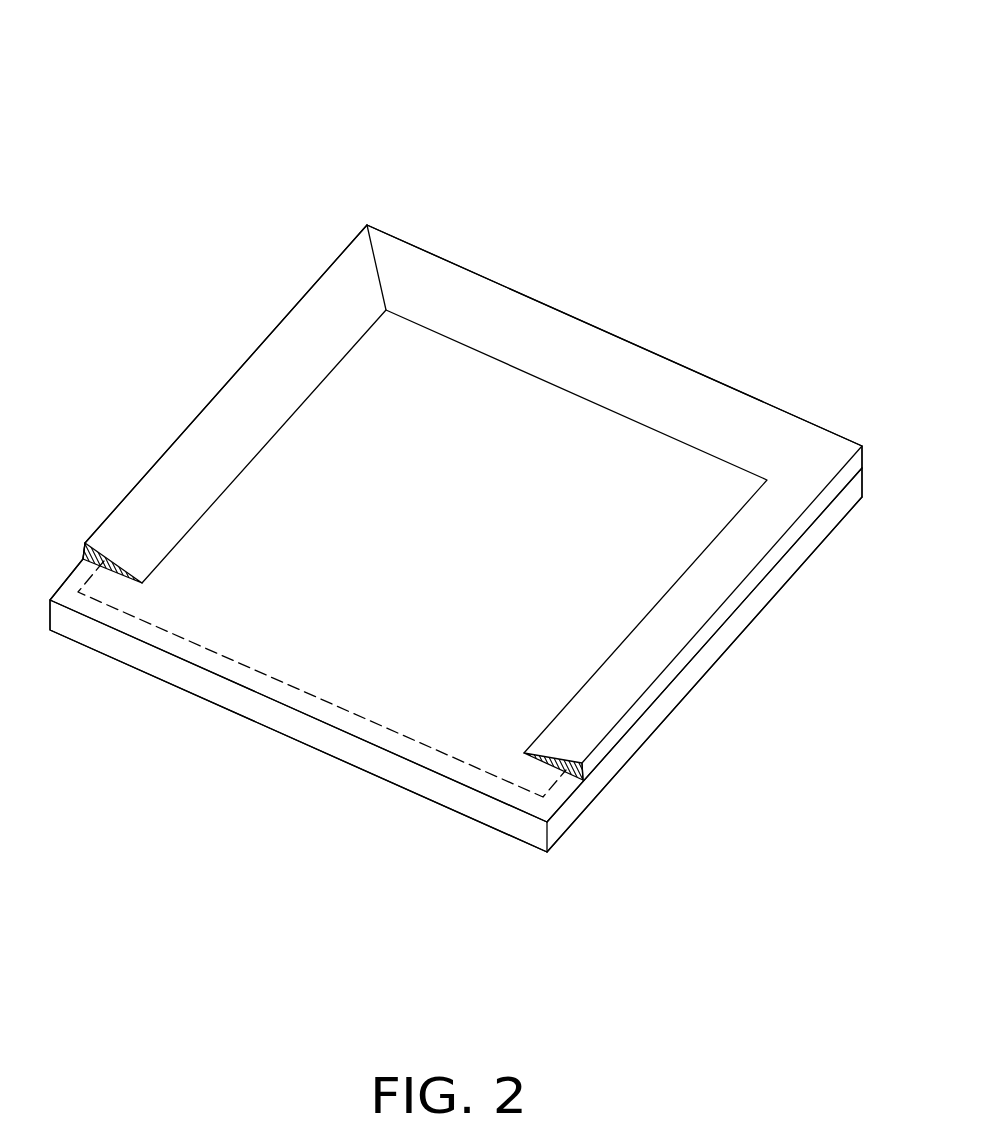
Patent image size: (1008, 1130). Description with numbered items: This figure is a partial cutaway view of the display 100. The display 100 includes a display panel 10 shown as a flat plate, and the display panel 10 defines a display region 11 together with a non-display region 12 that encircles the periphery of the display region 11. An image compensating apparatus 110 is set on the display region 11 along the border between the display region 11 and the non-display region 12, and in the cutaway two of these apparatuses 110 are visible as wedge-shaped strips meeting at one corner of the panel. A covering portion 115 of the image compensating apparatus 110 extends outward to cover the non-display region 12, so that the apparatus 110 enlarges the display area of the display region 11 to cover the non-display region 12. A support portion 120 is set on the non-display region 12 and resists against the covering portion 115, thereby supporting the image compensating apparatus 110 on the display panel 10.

The display 100 is at (382, 72).
The display panel 10 is at (442, 787).
The display region 11 is at (352, 638).
The non-display region 12 is at (185, 652).
The image compensating apparatus 110 is at (208, 437).
The covering portion 115 is at (87, 553).
The support portion 120 is at (585, 775).